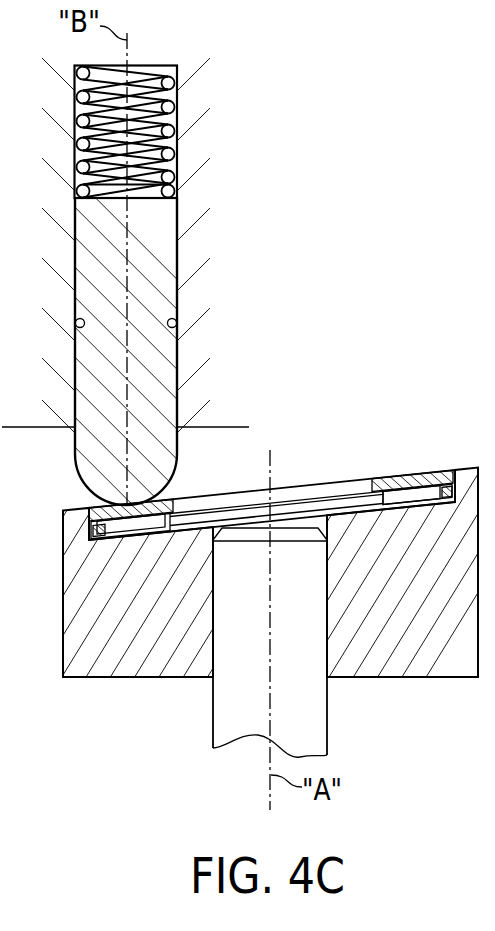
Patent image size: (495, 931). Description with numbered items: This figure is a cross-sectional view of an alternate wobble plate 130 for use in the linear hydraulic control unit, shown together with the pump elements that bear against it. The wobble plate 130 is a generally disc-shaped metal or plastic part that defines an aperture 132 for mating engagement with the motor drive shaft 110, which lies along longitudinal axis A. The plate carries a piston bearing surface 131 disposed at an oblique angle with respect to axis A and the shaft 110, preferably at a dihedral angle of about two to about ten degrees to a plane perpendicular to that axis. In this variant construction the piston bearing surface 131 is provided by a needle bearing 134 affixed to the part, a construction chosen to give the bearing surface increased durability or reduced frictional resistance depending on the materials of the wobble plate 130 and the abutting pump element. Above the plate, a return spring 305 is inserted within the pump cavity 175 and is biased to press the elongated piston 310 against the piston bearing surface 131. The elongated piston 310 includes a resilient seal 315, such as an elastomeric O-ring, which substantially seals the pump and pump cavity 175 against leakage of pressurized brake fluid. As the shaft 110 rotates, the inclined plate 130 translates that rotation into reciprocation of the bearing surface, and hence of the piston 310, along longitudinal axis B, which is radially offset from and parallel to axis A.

The motor drive shaft 110 is at (320, 718).
The wobble plate 130 is at (428, 678).
The piston bearing surface 131 is at (470, 468).
The aperture 132 is at (303, 523).
The needle bearing 134 is at (400, 484).
The pump cavity 175 is at (172, 96).
The return spring 305 is at (172, 153).
The elongated piston 310 is at (167, 244).
The resilient seal 315 is at (177, 323).